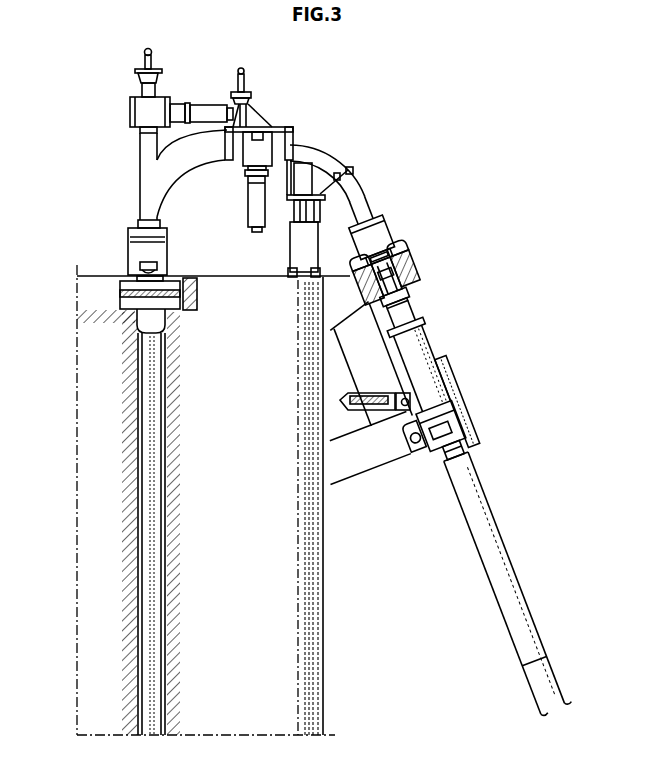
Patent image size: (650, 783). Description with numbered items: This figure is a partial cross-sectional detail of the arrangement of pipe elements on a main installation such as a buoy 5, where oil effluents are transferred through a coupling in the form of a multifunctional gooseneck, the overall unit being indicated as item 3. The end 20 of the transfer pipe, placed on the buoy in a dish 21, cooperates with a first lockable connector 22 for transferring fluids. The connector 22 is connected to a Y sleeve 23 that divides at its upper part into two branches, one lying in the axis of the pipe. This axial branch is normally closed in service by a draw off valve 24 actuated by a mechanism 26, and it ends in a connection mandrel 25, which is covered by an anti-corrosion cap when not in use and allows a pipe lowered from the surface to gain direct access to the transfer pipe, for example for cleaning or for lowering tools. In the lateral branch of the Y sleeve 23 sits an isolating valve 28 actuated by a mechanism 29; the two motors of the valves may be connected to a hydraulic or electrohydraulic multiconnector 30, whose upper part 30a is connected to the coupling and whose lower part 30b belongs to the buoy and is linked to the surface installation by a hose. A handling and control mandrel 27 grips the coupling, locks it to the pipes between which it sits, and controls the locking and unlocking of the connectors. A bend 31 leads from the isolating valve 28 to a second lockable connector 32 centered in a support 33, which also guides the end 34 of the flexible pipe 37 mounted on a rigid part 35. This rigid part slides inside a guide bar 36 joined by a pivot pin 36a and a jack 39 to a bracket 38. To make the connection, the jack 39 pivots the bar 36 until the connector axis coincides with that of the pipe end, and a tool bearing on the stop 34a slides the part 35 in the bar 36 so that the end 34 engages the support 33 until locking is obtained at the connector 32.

The pipe connecting unit 3 is at (437, 236).
The buoy 5 is at (330, 697).
The end of the transfer pipe 20 is at (130, 300).
The dish 21 is at (120, 293).
The first lockable connector 22 is at (138, 247).
The Y sleeve 23 is at (140, 175).
The draw off valve 24 is at (130, 113).
The connection mandrel 25 is at (137, 71).
The mechanism 26 is at (197, 103).
The handling and control mandrel 27 is at (249, 90).
The isolating valve 28 is at (257, 138).
The mechanism 29 is at (247, 207).
The multiconnector 30 is at (323, 248).
The upper part of the multiconnector 30a is at (290, 245).
The lower part of the multiconnector 30b is at (303, 268).
The bend 31 is at (327, 155).
The second lockable connector 32 is at (390, 233).
The support 33 is at (410, 253).
The end of the flexible pipe 34 is at (414, 273).
The stop 34a is at (410, 298).
The rigid part of the flexible pipe 35 is at (432, 358).
The guide bar 36 is at (459, 397).
The pivot pin 36a is at (416, 452).
The flexible pipe 37 is at (494, 519).
The bracket 38 is at (358, 460).
The jack 39 is at (374, 392).